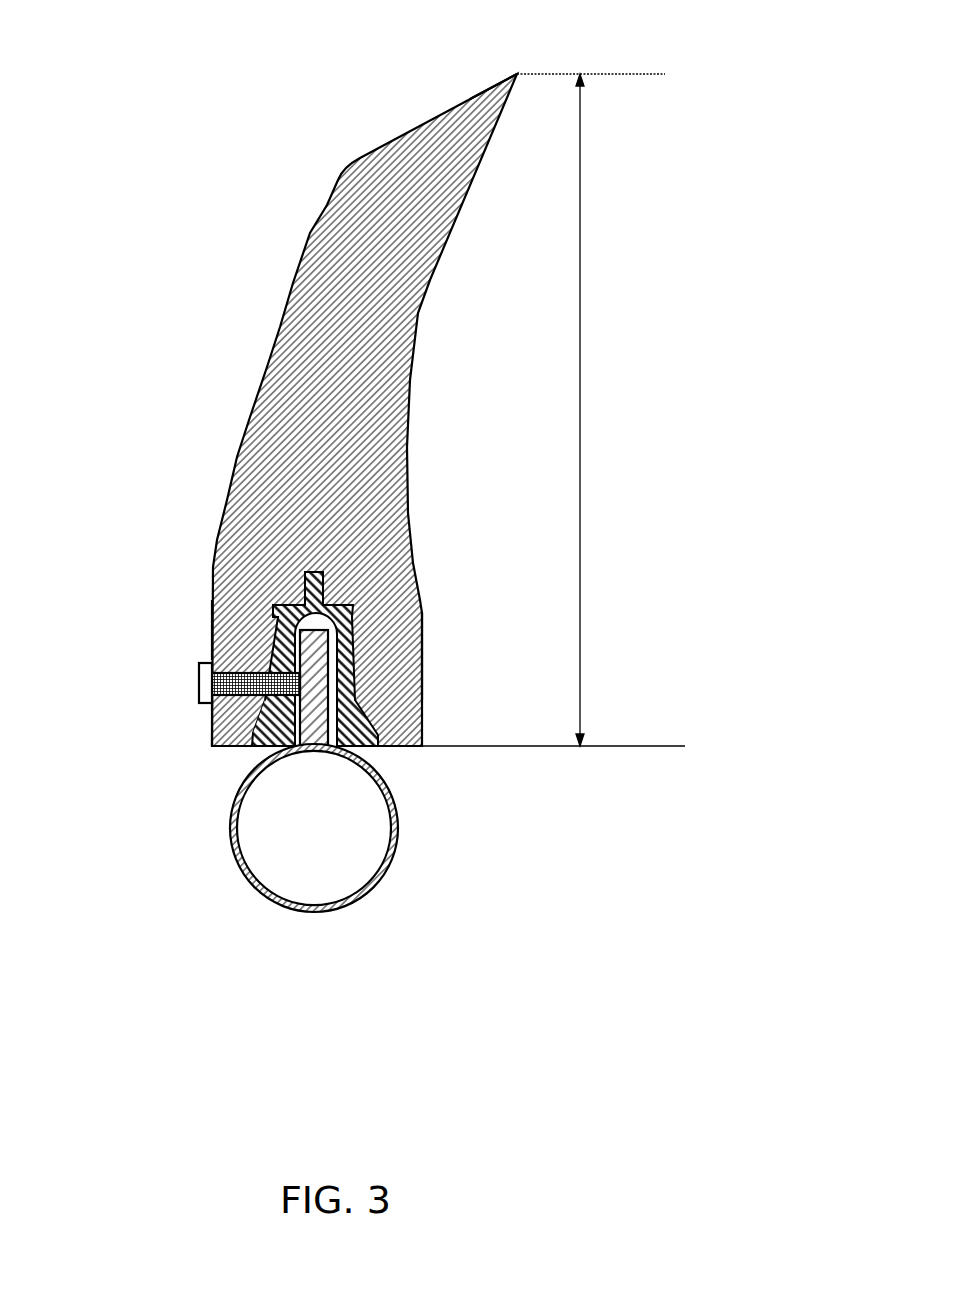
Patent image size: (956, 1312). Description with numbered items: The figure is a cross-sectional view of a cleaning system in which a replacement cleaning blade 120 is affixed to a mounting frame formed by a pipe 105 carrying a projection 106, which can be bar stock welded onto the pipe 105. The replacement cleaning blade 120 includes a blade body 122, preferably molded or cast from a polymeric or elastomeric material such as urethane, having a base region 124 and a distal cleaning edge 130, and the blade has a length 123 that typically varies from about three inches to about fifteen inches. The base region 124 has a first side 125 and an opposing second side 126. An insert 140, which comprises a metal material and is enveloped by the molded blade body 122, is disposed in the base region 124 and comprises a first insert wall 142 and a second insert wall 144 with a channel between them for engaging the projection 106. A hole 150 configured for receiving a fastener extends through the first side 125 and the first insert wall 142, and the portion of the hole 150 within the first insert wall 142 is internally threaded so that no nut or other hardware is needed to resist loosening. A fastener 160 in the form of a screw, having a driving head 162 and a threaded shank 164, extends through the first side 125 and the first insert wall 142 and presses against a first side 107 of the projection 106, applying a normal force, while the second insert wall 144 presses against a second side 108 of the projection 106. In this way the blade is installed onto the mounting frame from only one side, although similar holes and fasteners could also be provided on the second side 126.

The pipe 105 is at (248, 880).
The projection 106 is at (393, 748).
The first side 107 is at (257, 672).
The second side 108 is at (330, 680).
The replacement cleaning blade 120 is at (371, 420).
The blade body 122 is at (210, 447).
The length 123 is at (580, 408).
The base region 124 is at (266, 701).
The first side 125 is at (200, 663).
The second side 126 is at (423, 640).
The distal cleaning edge 130 is at (495, 135).
The insert 140 is at (257, 748).
The first insert wall 142 is at (222, 747).
The second insert wall 144 is at (330, 728).
The hole 150 is at (212, 706).
The fastener 160 is at (197, 685).
The driving head 162 is at (199, 675).
The threaded shank 164 is at (293, 636).